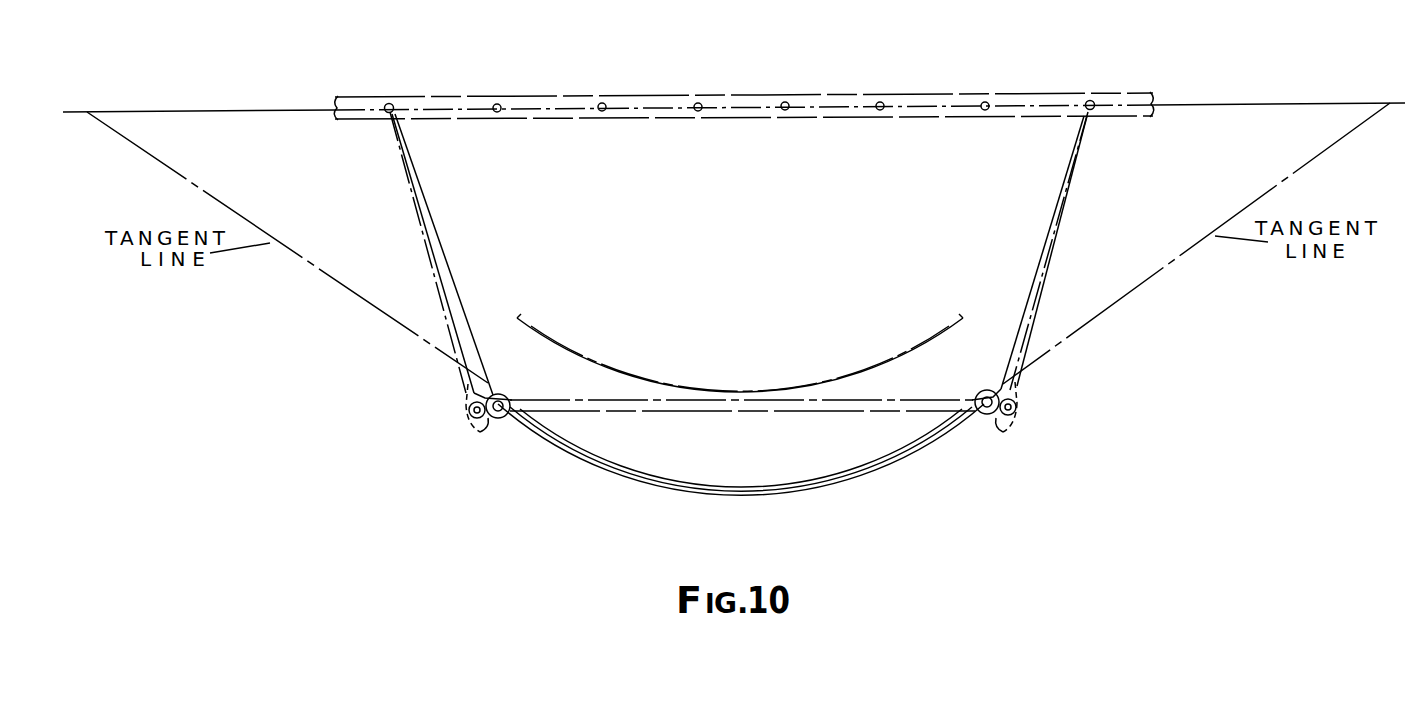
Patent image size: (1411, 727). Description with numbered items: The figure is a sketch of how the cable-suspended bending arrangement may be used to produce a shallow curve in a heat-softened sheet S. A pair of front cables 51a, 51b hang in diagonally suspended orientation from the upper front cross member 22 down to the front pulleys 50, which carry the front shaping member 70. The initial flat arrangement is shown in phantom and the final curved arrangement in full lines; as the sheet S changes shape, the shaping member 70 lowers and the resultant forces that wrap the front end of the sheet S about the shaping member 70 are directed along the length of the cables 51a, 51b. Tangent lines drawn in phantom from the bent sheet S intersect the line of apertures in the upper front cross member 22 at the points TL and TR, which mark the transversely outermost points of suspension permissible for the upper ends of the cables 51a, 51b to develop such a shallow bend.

The upper front cross member 22 is at (957, 98).
The front cable 51a is at (438, 240).
The front cable 51b is at (1048, 232).
The front pulley 50 is at (488, 428).
The front shaping member 70 is at (700, 386).
The sheet S is at (792, 411).
The left tangent point TL is at (88, 117).
The right tangent point TR is at (1391, 108).